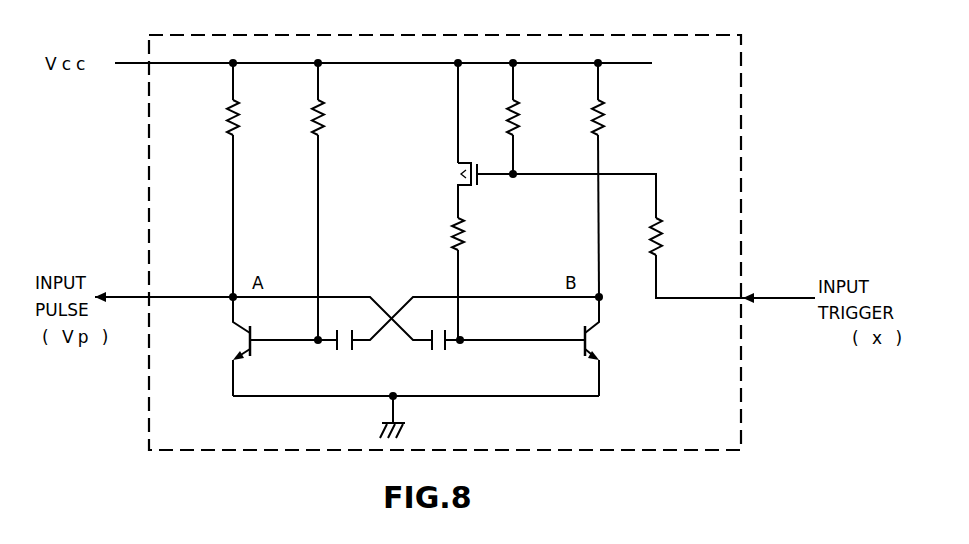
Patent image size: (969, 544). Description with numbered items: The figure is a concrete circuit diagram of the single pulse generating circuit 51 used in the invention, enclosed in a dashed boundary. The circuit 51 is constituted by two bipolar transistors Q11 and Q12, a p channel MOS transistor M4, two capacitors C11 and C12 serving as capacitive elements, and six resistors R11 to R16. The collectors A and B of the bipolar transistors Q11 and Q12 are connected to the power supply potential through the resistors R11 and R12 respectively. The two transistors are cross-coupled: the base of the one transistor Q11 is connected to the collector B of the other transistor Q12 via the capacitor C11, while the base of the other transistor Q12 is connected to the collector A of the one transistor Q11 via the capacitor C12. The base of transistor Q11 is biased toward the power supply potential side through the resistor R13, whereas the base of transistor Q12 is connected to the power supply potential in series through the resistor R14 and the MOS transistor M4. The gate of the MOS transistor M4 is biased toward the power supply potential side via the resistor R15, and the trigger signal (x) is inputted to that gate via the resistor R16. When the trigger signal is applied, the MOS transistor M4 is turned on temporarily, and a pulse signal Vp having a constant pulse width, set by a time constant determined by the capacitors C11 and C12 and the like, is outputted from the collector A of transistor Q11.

The single pulse generating circuit 51 is at (743, 82).
The resistor R11 is at (208, 180).
The resistor R12 is at (619, 180).
The resistor R13 is at (294, 201).
The resistor R14 is at (433, 279).
The resistor R15 is at (534, 118).
The resistor R16 is at (732, 258).
The p channel MOS transistor M4 is at (443, 140).
The capacitor C11 is at (307, 356).
The capacitor C12 is at (506, 356).
The bipolar transistor Q11 is at (255, 346).
The bipolar transistor Q12 is at (574, 346).